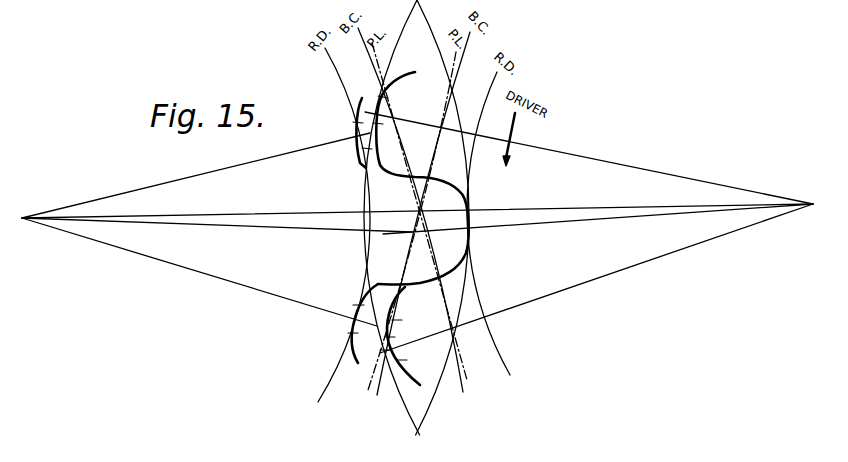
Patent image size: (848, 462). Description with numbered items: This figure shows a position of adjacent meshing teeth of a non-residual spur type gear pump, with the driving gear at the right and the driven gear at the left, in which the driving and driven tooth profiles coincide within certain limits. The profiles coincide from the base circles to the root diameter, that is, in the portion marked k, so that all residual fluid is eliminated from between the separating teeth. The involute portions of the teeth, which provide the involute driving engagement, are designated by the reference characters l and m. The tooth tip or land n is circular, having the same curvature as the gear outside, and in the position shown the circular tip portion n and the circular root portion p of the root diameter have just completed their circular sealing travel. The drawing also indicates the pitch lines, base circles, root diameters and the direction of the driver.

The involute portion of tooth l is at (428, 172).
The involute portion of tooth m is at (415, 186).
The coinciding portion of driving and driven profiles k is at (469, 190).
The tooth tip or land n is at (463, 225).
The circular root portion p is at (475, 222).